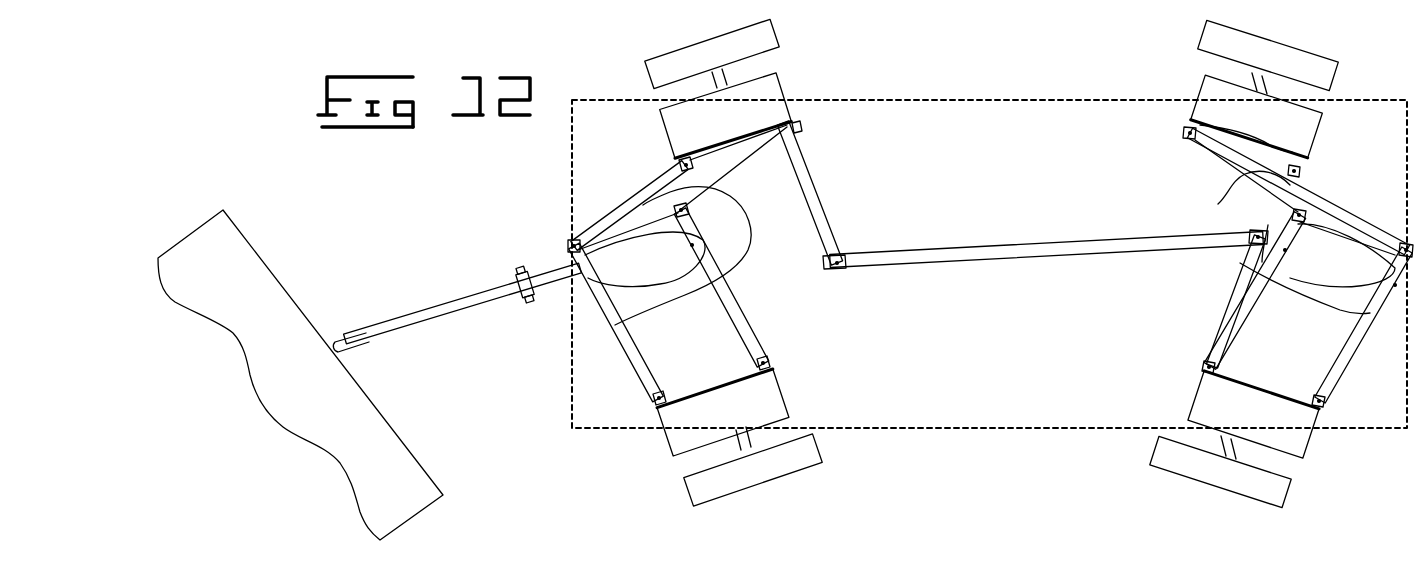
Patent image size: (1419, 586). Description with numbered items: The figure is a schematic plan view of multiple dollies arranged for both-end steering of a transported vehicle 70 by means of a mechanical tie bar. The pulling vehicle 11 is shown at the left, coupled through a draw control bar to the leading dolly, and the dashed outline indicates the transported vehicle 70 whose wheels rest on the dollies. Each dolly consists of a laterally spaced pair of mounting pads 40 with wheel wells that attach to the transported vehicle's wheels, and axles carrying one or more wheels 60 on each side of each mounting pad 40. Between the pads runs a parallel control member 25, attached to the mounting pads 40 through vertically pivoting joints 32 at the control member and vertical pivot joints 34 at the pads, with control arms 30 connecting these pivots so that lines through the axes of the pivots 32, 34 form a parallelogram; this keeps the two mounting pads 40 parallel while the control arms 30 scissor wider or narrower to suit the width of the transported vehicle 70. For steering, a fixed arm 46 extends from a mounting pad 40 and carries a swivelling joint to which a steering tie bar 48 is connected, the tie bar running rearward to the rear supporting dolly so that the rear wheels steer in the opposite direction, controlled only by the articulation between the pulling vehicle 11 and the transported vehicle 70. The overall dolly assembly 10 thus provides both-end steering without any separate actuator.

The steering handle assembly 10 is at (538, 226).
The pulling vehicle 11 is at (377, 413).
The parallel control member 25 is at (655, 238).
The control arms 30 is at (1237, 263).
The vertically pivoting joints 32 is at (689, 214).
The vertical pivot joints 34 is at (680, 165).
The mounting pads 40 is at (775, 88).
The fixed arm 46 is at (814, 208).
The steering tie bar 48 is at (1023, 251).
The wheels 60 is at (770, 33).
The transported vehicle 70 is at (572, 378).